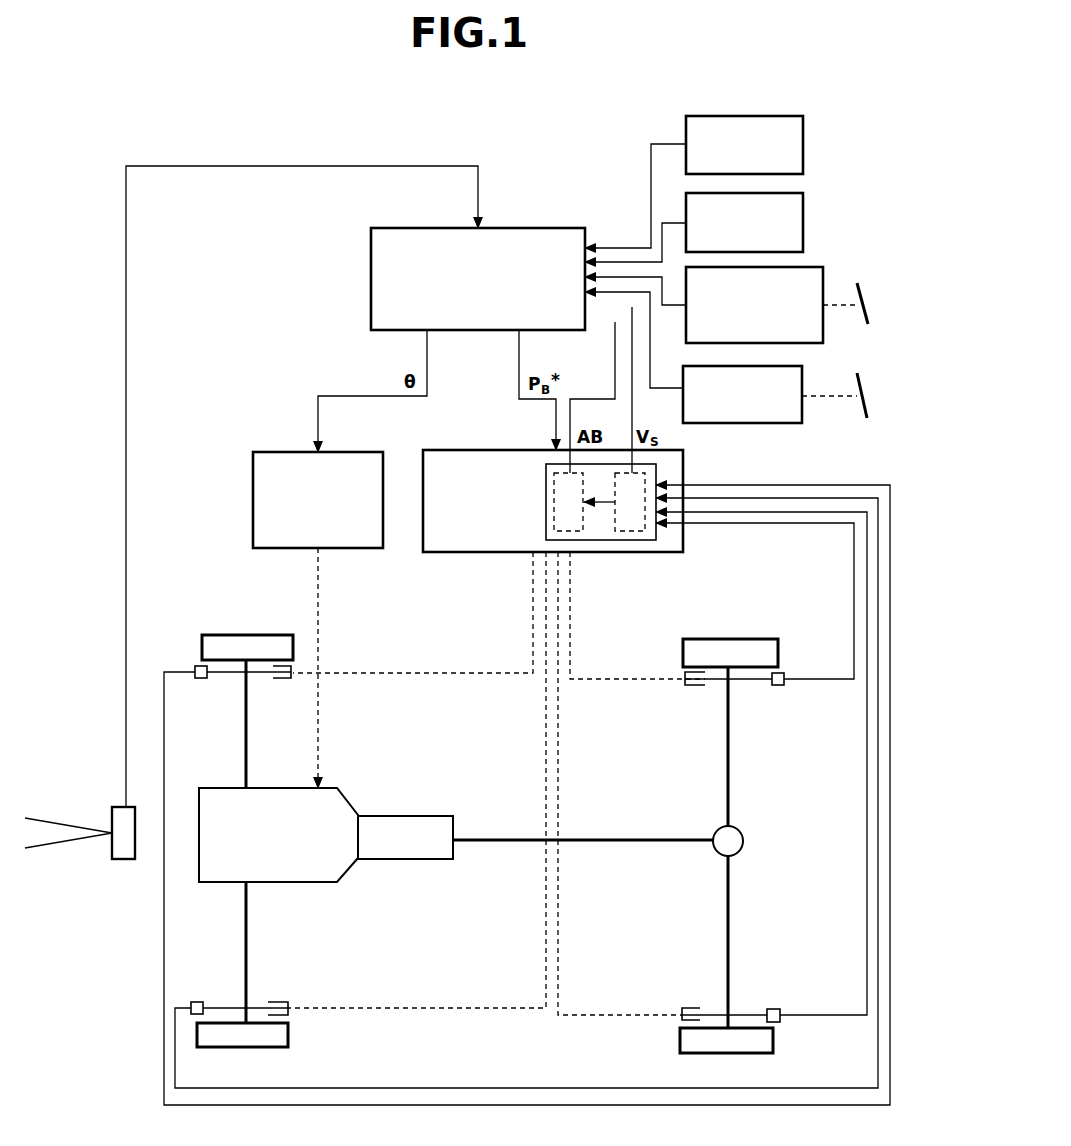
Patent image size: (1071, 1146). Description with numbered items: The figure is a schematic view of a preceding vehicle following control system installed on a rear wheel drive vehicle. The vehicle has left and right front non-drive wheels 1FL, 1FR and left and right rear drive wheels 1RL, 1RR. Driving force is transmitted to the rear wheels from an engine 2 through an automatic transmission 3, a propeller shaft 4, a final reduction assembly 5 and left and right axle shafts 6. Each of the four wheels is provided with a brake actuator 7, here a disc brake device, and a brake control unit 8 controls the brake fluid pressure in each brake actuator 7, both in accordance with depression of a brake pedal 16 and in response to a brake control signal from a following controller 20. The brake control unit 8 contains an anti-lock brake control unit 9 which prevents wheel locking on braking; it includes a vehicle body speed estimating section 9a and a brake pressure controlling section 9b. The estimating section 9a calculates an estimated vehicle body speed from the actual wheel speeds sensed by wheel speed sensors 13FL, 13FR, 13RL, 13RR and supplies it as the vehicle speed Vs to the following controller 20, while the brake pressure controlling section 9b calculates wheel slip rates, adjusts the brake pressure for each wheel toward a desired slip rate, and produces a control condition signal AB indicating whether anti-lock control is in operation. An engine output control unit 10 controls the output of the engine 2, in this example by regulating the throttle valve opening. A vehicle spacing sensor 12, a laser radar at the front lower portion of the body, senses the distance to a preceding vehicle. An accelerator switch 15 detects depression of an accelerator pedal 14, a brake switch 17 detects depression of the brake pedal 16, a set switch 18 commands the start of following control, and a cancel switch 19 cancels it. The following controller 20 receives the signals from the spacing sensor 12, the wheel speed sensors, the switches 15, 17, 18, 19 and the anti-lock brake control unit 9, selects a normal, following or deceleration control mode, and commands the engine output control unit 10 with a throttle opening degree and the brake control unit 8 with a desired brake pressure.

The right front non-drive wheel 1FR is at (248, 635).
The left front non-drive wheel 1FL is at (290, 1036).
The right rear drive wheel 1RR is at (683, 656).
The left rear drive wheel 1RL is at (680, 1041).
The engine 2 is at (296, 878).
The automatic transmission 3 is at (400, 862).
The propeller shaft 4 is at (612, 838).
The final reduction assembly 5 is at (745, 842).
The axle shaft 6 is at (730, 798).
The brake actuator 7 is at (282, 683).
The brake control unit 8 is at (478, 450).
The anti-lock brake control unit 9 is at (690, 475).
The vehicle body speed estimating section 9a is at (637, 531).
The brake pressure controlling section 9b is at (583, 531).
The engine output control unit 10 is at (274, 452).
The vehicle spacing sensor 12 is at (122, 862).
The wheel speed sensor 13FR is at (203, 683).
The wheel speed sensor 13FL is at (195, 1000).
The wheel speed sensor 13RR is at (776, 690).
The wheel speed sensor 13RL is at (772, 1008).
The accelerator pedal 14 is at (862, 289).
The accelerator switch 15 is at (797, 270).
The brake pedal 16 is at (862, 384).
The brake switch 17 is at (753, 424).
The set switch 18 is at (805, 150).
The cancel switch 19 is at (805, 213).
The following controller 20 is at (530, 228).